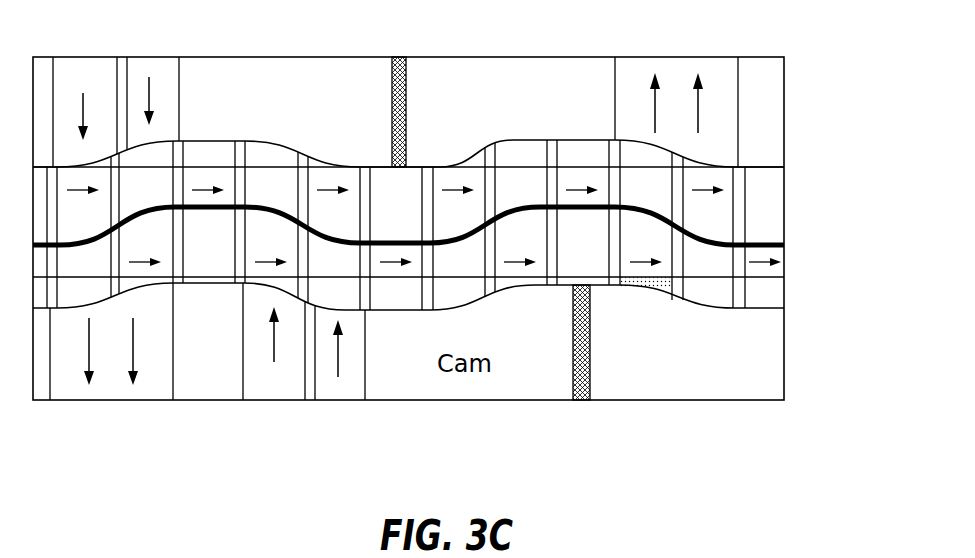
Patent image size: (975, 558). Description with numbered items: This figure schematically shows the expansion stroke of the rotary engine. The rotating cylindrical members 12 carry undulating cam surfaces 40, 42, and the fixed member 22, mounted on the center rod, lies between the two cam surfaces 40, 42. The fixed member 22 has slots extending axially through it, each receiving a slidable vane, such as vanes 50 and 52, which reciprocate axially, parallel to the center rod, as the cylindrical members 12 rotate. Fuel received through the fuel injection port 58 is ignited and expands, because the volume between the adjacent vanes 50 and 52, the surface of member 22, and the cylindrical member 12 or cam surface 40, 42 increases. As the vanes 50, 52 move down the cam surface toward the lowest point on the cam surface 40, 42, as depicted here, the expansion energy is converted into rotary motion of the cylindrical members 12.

The cylindrical member 12 is at (717, 110).
The fixed member 22 is at (702, 227).
The undulating cam surface 40 is at (697, 305).
The undulating cam surface 42 is at (577, 138).
The vane 50 is at (615, 290).
The vane 52 is at (675, 293).
The fuel injection port 58 is at (573, 327).